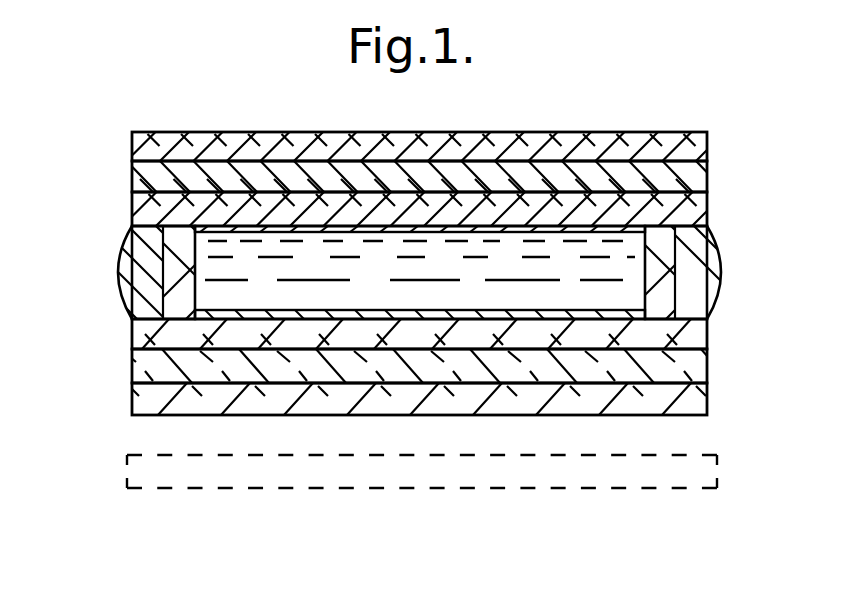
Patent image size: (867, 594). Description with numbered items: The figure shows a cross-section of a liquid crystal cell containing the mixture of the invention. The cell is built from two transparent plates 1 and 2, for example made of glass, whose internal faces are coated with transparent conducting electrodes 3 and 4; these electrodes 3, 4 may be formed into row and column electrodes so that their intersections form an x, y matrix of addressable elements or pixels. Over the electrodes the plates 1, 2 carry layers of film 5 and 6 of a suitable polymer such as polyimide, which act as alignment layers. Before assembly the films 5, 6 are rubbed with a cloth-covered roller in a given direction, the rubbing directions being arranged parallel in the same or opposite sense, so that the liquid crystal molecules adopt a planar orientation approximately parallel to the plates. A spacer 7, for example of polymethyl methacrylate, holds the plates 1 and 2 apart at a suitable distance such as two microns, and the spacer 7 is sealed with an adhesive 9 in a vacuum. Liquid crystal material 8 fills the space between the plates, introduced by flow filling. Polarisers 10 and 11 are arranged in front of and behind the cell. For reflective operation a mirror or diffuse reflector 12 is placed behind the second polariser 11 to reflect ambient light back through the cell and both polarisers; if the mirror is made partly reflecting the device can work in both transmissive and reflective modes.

The transparent plate 1 is at (248, 173).
The transparent plate 2 is at (140, 368).
The transparent conducting electrode 3 is at (610, 210).
The transparent conducting electrode 4 is at (137, 335).
The layer of film 5 is at (645, 226).
The layer of film 6 is at (645, 333).
The spacer 7 is at (663, 272).
The liquid crystal material 8 is at (133, 252).
The adhesive 9 is at (127, 272).
The polariser 10 is at (153, 140).
The polariser 11 is at (686, 405).
The mirror or diffuse reflector 12 is at (443, 470).